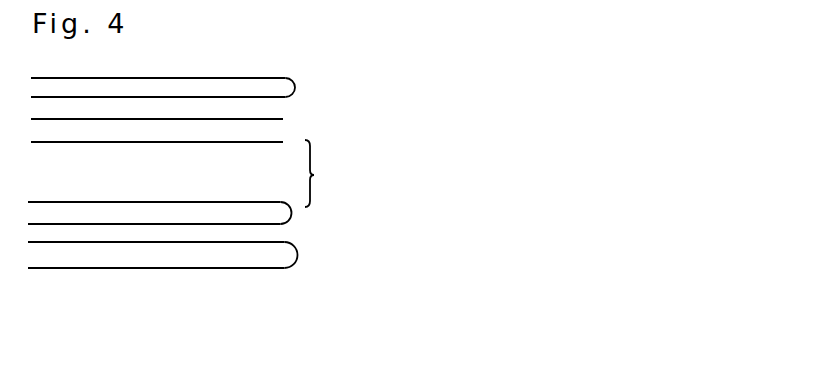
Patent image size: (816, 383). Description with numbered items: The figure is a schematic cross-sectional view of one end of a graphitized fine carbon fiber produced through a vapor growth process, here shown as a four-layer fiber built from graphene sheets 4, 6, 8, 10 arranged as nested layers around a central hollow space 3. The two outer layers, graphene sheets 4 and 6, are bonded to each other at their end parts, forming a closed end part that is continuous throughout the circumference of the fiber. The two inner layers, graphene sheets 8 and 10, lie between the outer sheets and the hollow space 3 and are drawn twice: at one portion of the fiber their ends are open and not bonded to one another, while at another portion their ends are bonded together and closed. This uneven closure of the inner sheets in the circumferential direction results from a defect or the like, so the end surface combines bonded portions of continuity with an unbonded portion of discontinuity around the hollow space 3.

The graphene sheet 4 is at (157, 181).
The graphene sheet 6 is at (157, 177).
The graphene sheet 8 is at (155, 203).
The graphene sheet 10 is at (184, 183).
The hollow space 3 is at (379, 173).